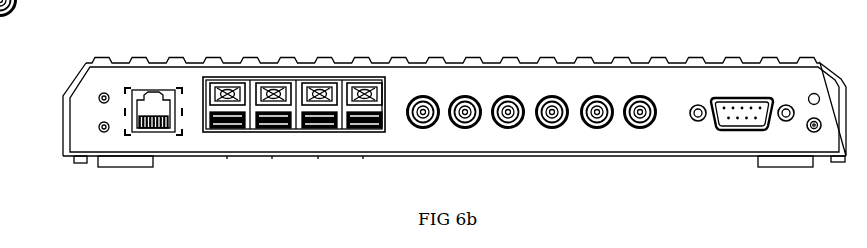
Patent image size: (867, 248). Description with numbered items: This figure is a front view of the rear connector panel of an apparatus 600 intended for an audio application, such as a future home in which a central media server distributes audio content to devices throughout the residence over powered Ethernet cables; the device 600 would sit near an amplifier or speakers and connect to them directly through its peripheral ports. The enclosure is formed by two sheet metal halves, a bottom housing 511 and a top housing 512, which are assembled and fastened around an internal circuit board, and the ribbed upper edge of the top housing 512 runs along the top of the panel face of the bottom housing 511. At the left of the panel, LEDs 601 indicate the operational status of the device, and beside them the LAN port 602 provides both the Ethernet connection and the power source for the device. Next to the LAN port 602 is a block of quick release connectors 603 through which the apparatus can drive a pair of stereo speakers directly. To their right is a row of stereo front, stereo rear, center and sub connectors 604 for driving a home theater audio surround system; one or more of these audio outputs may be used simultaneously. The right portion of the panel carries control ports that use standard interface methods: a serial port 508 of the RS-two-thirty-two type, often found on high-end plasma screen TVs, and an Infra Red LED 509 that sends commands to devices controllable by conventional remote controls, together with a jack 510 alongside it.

The apparatus 600 is at (88, 43).
The LEDs 601 is at (103, 131).
The LAN port 602 is at (150, 100).
The quick release connectors 603 is at (217, 127).
The stereo front, stereo rear, center and sub connectors 604 is at (624, 116).
The RS-232 serial port 508 is at (712, 124).
The Infra Red (IR) LED 509 is at (810, 104).
The IR jack 510 is at (812, 132).
The bottom housing 511 is at (667, 73).
The top housing 512 is at (763, 60).